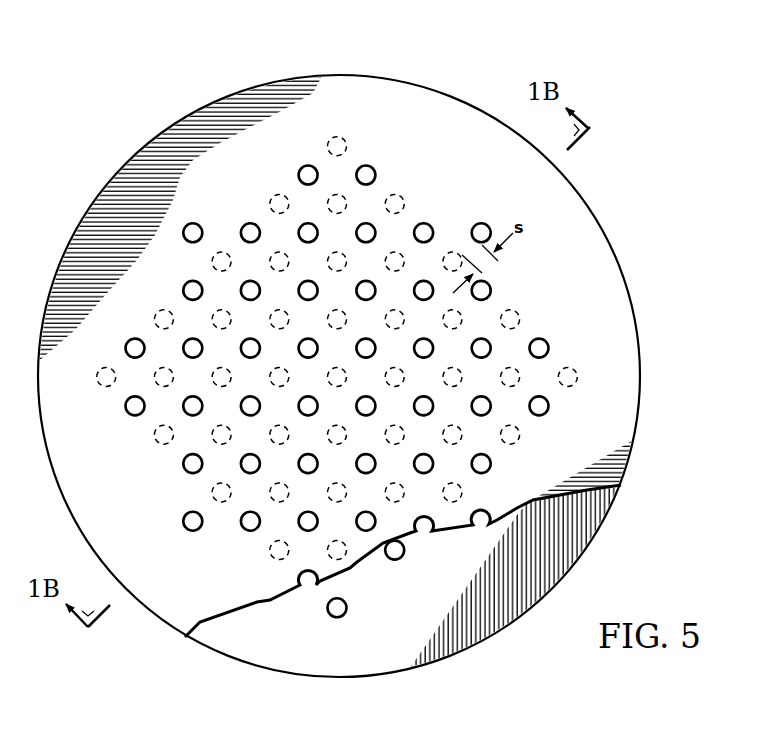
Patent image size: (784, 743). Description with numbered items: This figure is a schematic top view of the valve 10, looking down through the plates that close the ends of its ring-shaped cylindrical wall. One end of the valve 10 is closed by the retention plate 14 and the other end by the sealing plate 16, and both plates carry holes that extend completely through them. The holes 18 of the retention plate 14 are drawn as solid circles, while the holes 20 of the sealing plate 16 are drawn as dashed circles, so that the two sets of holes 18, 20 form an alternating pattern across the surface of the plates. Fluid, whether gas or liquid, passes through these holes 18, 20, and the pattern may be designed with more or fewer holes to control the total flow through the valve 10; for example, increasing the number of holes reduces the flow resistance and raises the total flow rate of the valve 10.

The valve 10 is at (178, 58).
The retention plate 14 is at (128, 497).
The sealing plate 16 is at (296, 647).
The holes 18 is at (540, 356).
The holes 20 is at (284, 556).